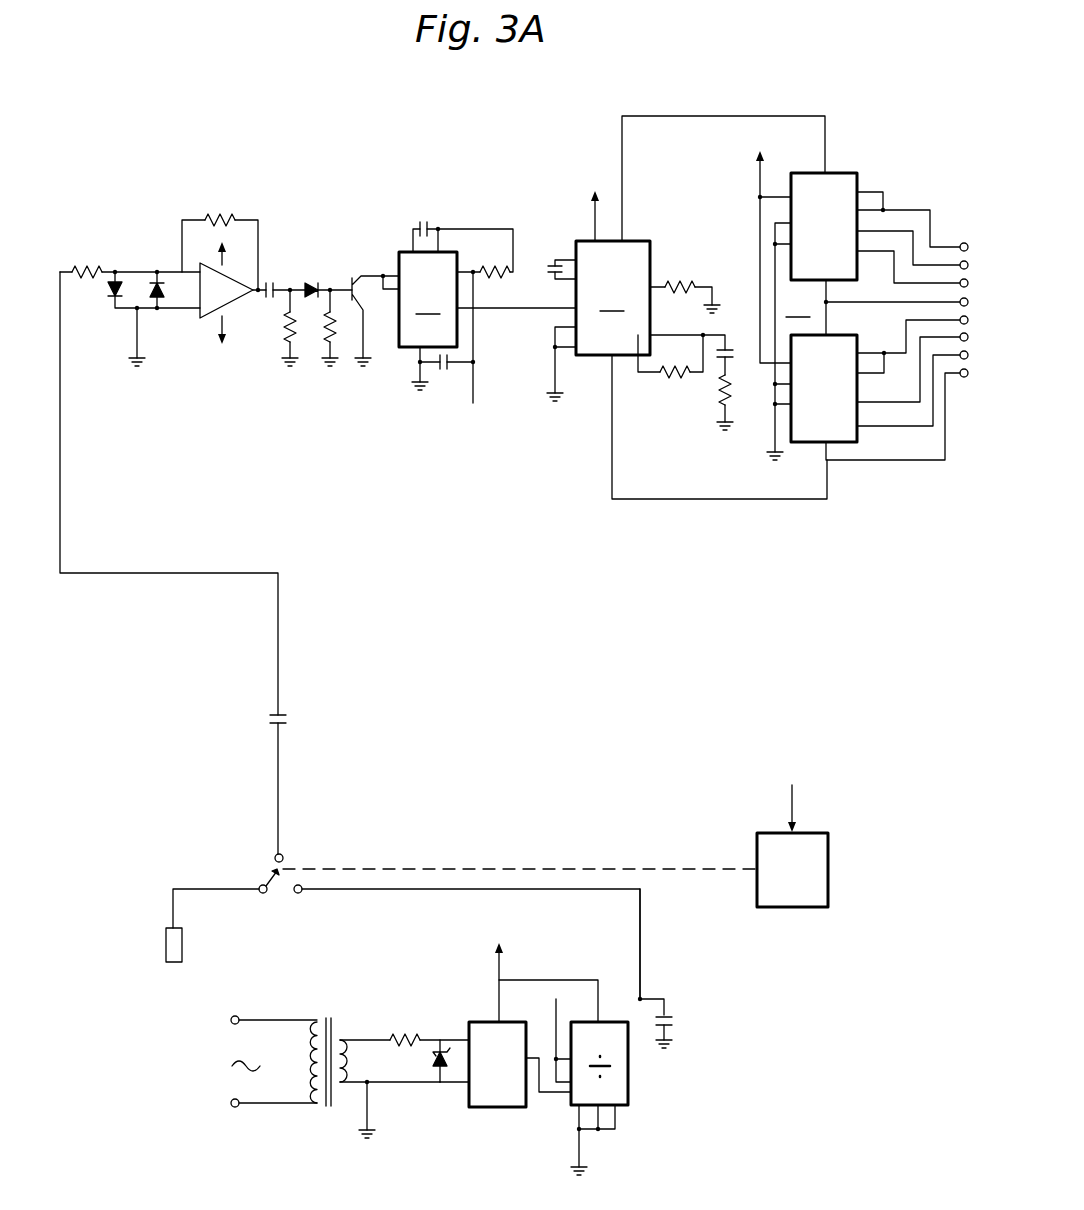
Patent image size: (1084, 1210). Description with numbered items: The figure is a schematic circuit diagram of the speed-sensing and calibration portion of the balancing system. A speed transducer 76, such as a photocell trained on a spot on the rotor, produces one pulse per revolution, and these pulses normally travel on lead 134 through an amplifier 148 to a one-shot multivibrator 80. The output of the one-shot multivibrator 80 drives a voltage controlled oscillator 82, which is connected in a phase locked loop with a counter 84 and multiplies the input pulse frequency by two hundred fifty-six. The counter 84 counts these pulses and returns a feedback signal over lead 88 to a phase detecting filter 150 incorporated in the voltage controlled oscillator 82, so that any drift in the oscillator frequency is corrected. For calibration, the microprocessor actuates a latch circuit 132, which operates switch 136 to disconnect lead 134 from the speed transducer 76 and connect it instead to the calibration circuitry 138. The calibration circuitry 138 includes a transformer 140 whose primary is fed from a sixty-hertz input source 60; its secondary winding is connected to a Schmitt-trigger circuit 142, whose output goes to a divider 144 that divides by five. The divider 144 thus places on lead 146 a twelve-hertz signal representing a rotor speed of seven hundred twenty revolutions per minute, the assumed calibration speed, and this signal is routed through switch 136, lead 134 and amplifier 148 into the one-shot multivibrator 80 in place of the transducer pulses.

The 60-hertz input source 60 is at (232, 1063).
The speed transducer 76 is at (184, 940).
The one-shot multivibrator 80 is at (456, 312).
The voltage controlled oscillator 82 is at (640, 310).
The counter 84 is at (862, 305).
The feedback lead 88 is at (712, 500).
The latch circuit 132 is at (830, 851).
The lead 134 is at (280, 665).
The switch 136 is at (287, 864).
The calibration circuitry 138 is at (420, 1025).
The transformer 140 is at (318, 1106).
The Schmitt-trigger circuit 142 is at (490, 1110).
The divider 144 is at (630, 1072).
The lead 146 is at (642, 940).
The amplifier 148 is at (210, 322).
The phase detecting filter 150 is at (683, 388).